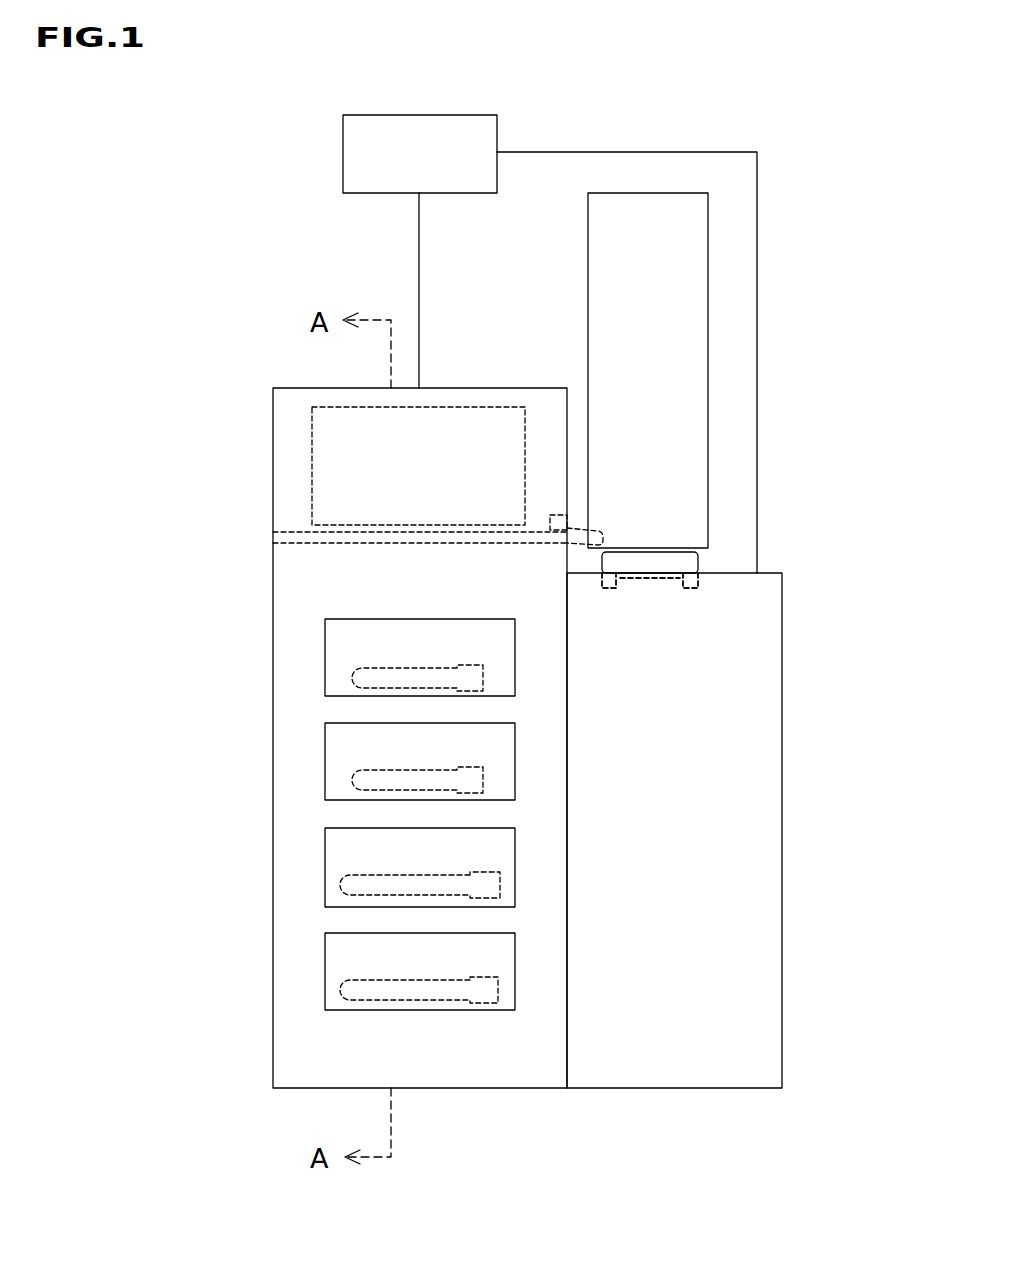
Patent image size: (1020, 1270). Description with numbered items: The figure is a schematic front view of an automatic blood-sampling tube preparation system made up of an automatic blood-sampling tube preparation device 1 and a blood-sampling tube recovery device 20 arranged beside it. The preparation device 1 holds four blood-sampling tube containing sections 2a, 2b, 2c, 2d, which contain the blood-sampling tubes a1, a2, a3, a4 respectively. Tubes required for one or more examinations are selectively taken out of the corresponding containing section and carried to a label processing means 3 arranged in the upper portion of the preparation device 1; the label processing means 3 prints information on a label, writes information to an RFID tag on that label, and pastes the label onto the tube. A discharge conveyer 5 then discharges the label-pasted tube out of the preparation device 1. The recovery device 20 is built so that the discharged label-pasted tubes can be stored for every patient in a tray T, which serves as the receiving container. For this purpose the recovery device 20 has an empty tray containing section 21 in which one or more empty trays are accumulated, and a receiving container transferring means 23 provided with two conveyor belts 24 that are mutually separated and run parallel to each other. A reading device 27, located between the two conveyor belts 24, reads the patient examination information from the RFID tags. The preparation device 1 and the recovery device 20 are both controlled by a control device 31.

The automatic blood-sampling tube preparation device 1 is at (281, 380).
The label processing means 3 is at (478, 425).
The discharge conveyer 5 is at (288, 530).
The control device 31 is at (436, 173).
The blood-sampling tube containing section 2a is at (505, 956).
The blood-sampling tube containing section 2b is at (505, 851).
The blood-sampling tube containing section 2c is at (505, 746).
The blood-sampling tube containing section 2d is at (505, 642).
The blood-sampling tube a1 is at (350, 985).
The blood-sampling tube a2 is at (350, 880).
The blood-sampling tube a3 is at (357, 775).
The blood-sampling tube a4 is at (357, 672).
The blood-sampling tube recovery device 20 is at (797, 792).
The empty tray containing section 21 is at (698, 292).
The receiving container transferring means 23 is at (713, 602).
The conveyor belt 24 is at (607, 590).
The reading device 27 is at (645, 590).
The tray T is at (700, 562).